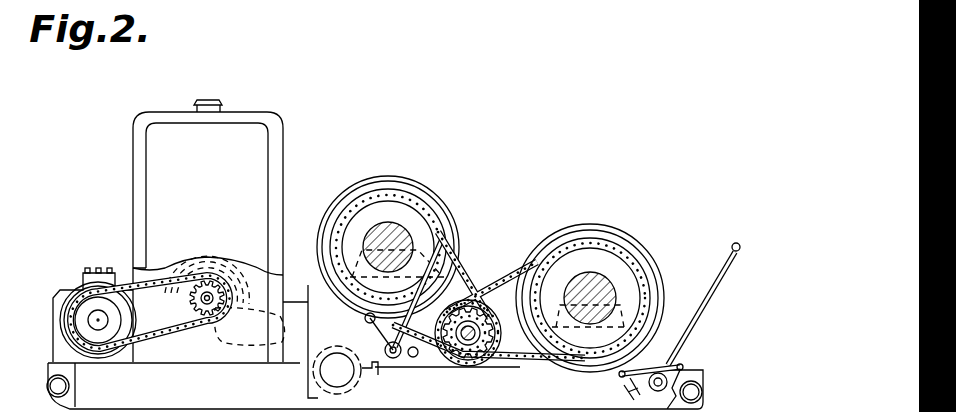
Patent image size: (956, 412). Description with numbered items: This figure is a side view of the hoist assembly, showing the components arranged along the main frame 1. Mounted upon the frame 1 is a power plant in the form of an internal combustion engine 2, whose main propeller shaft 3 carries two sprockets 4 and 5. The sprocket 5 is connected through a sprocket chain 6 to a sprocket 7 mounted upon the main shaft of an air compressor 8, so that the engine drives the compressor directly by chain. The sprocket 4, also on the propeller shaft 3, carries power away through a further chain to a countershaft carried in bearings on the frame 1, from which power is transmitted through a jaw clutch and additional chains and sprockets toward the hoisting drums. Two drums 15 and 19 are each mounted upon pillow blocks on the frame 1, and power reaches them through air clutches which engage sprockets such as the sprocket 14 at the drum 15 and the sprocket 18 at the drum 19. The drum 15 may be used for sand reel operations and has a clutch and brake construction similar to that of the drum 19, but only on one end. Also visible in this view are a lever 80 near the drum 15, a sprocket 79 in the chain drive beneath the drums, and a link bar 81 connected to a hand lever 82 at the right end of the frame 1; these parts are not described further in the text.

The frame 1 is at (218, 396).
The internal combustion engine 2 is at (216, 159).
The main propeller shaft 3 is at (228, 297).
The sprocket 4 is at (249, 327).
The sprocket 5 is at (197, 303).
The sprocket chain 6 is at (167, 268).
The sprocket 7 is at (80, 317).
The air compressor 8 is at (56, 290).
The sprocket 14 is at (418, 206).
The drum 15 is at (408, 172).
The sprocket 18 is at (610, 246).
The drum 19 is at (565, 220).
The drive sprocket 79 is at (416, 355).
The lever 80 is at (440, 241).
The link bar 81 is at (680, 367).
The hand lever 82 is at (737, 256).